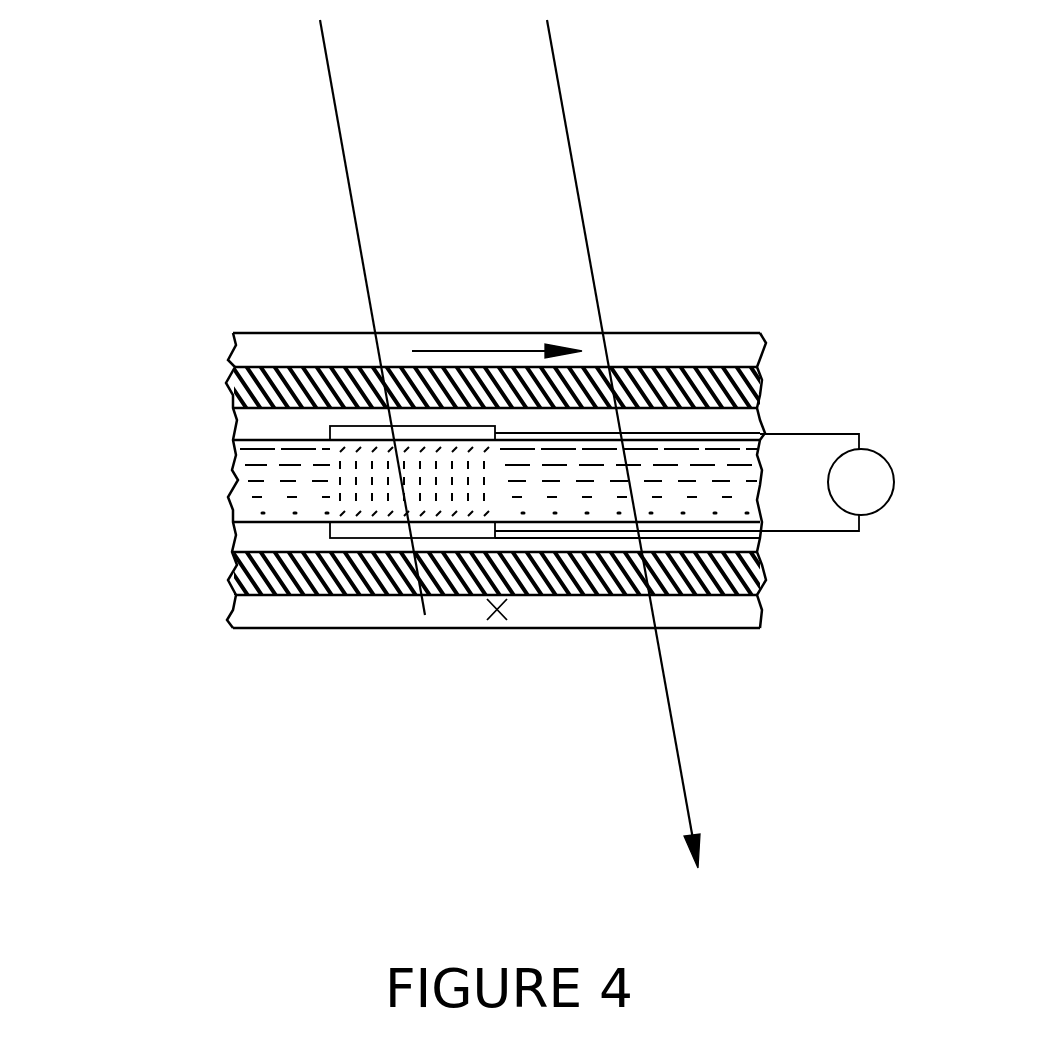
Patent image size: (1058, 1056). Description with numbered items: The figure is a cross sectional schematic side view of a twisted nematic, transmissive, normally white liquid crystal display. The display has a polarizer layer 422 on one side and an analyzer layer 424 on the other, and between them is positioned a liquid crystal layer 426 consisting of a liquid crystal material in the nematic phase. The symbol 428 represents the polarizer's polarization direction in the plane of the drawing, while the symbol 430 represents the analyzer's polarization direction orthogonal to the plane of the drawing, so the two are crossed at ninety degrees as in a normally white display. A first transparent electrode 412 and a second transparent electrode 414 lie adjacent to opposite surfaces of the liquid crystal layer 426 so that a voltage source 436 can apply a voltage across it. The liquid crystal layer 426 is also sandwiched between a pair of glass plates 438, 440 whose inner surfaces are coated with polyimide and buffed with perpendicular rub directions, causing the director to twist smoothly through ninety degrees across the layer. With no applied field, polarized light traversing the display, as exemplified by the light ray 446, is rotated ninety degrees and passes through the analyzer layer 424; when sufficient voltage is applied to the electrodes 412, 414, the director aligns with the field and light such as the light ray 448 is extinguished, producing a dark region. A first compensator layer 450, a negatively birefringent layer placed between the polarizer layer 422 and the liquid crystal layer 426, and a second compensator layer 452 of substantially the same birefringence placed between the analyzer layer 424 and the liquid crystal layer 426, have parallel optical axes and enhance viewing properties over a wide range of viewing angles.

The first transparent electrode 412 is at (330, 427).
The second transparent electrode 414 is at (330, 532).
The polarizer layer 422 is at (755, 347).
The analyzer layer 424 is at (747, 608).
The liquid crystal layer 426 is at (232, 497).
The polarization direction symbol 428 is at (460, 351).
The polarization direction symbol 430 is at (497, 620).
The voltage source 436 is at (878, 468).
The glass plate 438 is at (758, 423).
The glass plate 440 is at (753, 543).
The light ray 446 is at (566, 112).
The light ray 448 is at (343, 118).
The first compensator layer 450 is at (225, 402).
The second compensator layer 452 is at (240, 575).